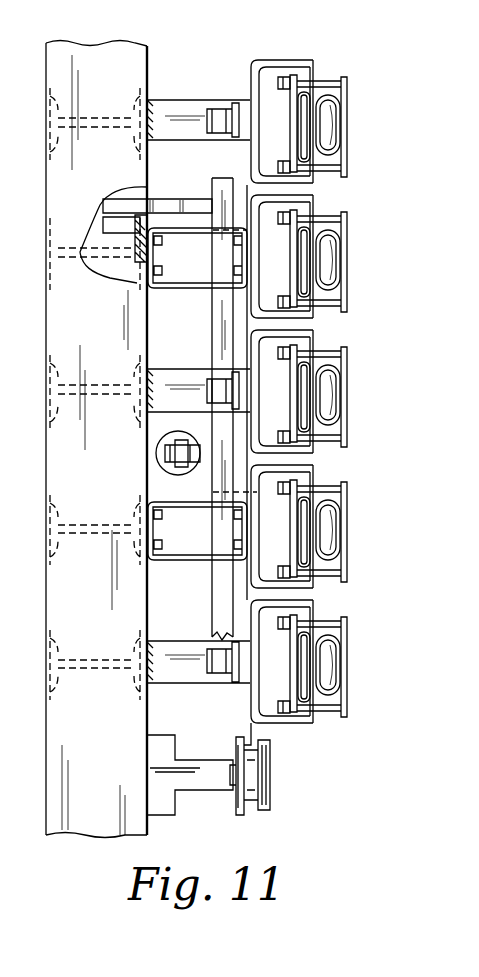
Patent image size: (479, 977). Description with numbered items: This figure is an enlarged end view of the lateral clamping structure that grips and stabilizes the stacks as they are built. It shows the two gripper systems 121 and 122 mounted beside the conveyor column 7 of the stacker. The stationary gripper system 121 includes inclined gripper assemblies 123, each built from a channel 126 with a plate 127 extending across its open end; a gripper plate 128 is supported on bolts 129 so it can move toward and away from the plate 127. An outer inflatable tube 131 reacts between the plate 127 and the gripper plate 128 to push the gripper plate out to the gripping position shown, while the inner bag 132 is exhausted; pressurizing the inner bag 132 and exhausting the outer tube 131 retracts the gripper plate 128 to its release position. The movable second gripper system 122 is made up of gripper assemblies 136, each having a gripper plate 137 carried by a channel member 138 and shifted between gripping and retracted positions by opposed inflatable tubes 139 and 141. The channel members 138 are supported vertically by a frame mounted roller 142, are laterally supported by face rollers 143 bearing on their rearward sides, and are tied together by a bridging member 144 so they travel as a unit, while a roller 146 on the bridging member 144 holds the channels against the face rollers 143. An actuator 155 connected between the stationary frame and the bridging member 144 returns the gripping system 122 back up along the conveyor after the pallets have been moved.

The column 7 is at (116, 439).
The gripper system 121 is at (346, 221).
The second gripper system 122 is at (345, 399).
The inclined gripper assembly 123 is at (341, 246).
The channel 126 is at (255, 492).
The plate 127 is at (312, 308).
The gripper plate 128 is at (343, 563).
The bolts 129 is at (341, 292).
The outer inflatable tube 131 is at (343, 497).
The inner bag 132 is at (300, 543).
The gripper assembly 136 is at (341, 130).
The gripper plate 137 is at (347, 88).
The channel member 138 is at (268, 62).
The inflatable tube 139 is at (334, 144).
The inflatable tube 141 is at (314, 90).
The frame mounted roller 142 is at (272, 800).
The face rollers 143 is at (220, 110).
The bridging member 144 is at (223, 315).
The roller 146 is at (133, 275).
The actuator 155 is at (157, 458).